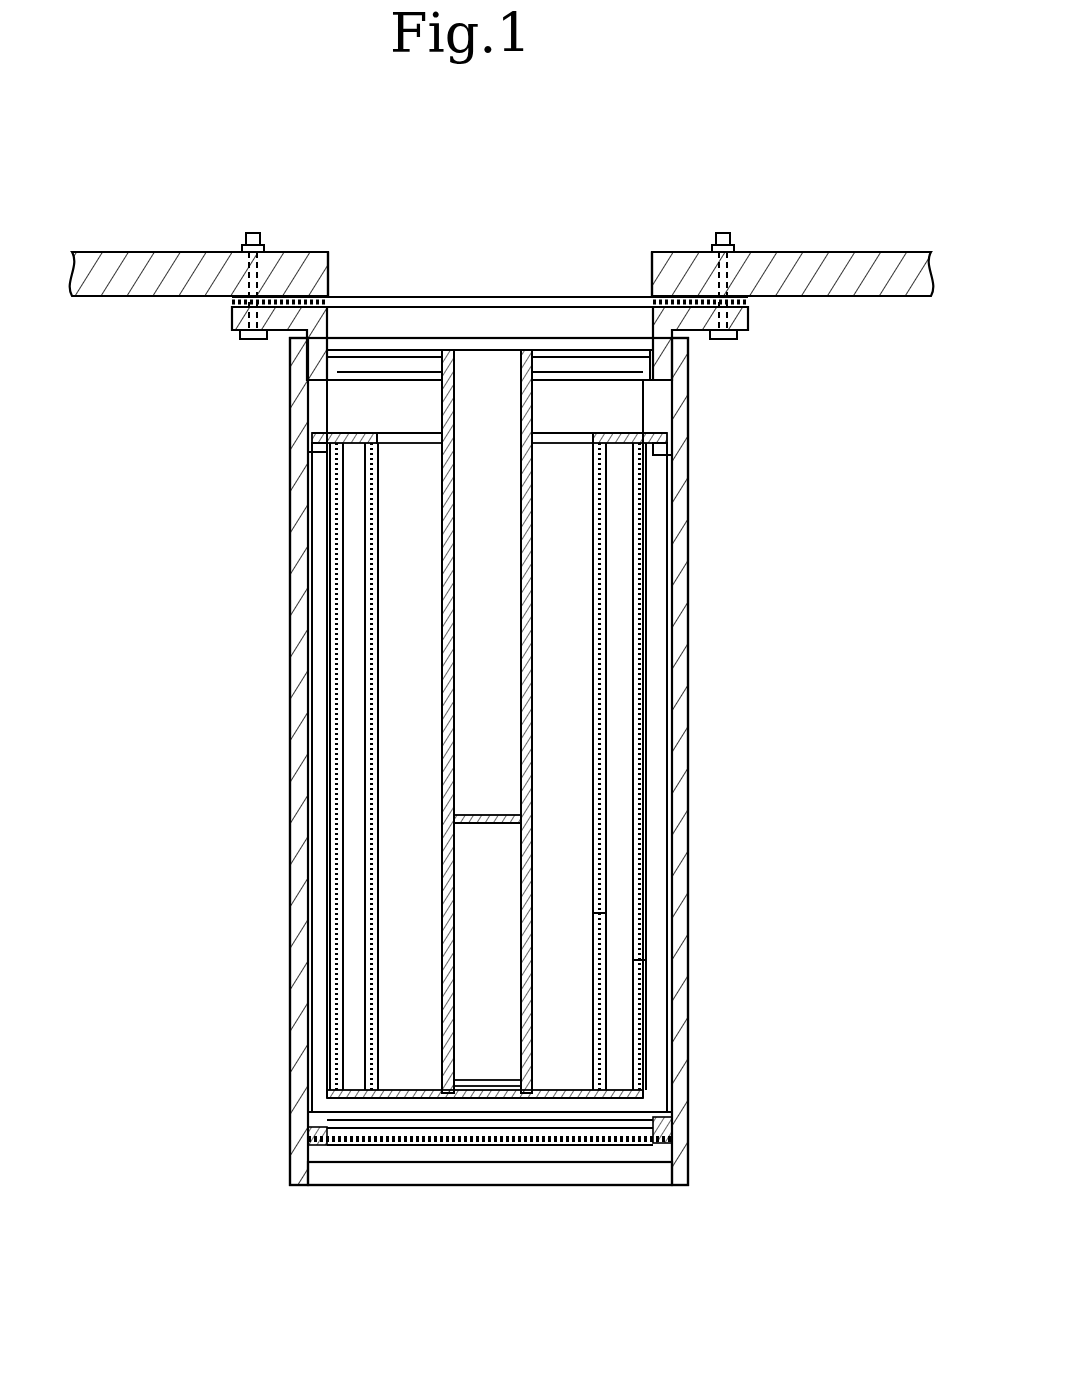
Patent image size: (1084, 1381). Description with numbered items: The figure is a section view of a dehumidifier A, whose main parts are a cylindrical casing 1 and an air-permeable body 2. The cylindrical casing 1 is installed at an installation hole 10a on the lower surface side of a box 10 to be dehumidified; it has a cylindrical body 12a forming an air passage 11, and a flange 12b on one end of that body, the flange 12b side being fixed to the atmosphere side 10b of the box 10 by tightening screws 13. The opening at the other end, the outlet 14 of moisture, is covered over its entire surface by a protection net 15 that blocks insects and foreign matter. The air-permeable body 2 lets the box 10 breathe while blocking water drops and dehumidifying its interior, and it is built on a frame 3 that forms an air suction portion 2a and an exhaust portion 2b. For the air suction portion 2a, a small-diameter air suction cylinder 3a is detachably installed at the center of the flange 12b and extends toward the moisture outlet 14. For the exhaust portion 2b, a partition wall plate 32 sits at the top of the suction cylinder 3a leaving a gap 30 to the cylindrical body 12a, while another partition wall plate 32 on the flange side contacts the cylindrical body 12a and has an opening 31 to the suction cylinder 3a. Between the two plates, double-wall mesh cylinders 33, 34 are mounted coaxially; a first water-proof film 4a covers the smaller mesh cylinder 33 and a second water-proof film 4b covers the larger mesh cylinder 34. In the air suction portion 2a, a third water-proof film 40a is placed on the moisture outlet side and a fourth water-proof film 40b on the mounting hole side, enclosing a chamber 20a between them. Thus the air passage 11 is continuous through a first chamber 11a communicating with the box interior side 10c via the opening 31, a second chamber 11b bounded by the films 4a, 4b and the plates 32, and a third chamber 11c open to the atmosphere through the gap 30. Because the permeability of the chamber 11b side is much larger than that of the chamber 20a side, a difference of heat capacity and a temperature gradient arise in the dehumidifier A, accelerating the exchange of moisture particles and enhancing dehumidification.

The cylindrical casing 1 is at (290, 630).
The air-permeable body 2 is at (816, 625).
The air suction portion 2a is at (532, 648).
The exhaust portion 2b is at (657, 748).
The frame 3 is at (805, 465).
The air suction cylinder 3a is at (532, 548).
The first water-proof film 4a is at (352, 829).
The second water-proof film 4b is at (327, 737).
The box 10 is at (845, 252).
The installation hole 10a is at (652, 266).
The atmosphere side 10b is at (908, 368).
The box interior side 10c is at (226, 181).
The air passage 11 is at (412, 470).
The first chamber 11a is at (435, 548).
The second chamber 11b is at (357, 606).
The third chamber 11c is at (318, 670).
The cylindrical body 12a is at (290, 497).
The flange 12b is at (232, 315).
The screws 13 is at (253, 338).
The outlet of moisture 14 is at (598, 1157).
The protection net 15 is at (493, 1142).
The chamber 20a is at (520, 992).
The gap 30 is at (657, 1098).
The opening 31 is at (575, 430).
The partition wall plate 32 is at (667, 447).
The mesh cylinder 33 is at (588, 913).
The mesh cylinder 34 is at (631, 960).
The third water-proof film 40a is at (487, 1082).
The fourth water-proof film 40b is at (487, 823).
The dehumidifier A is at (85, 688).